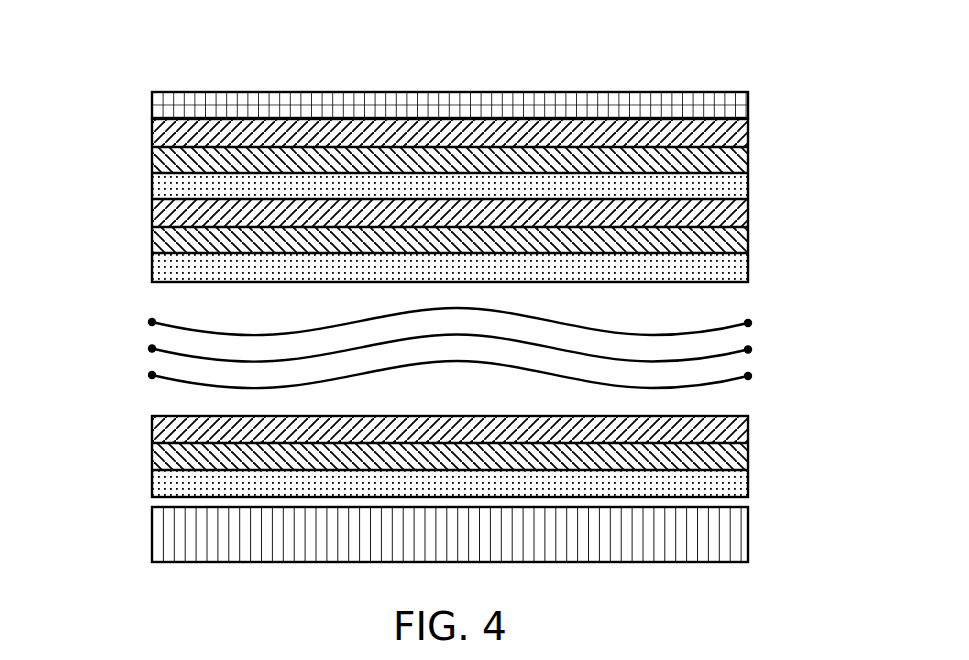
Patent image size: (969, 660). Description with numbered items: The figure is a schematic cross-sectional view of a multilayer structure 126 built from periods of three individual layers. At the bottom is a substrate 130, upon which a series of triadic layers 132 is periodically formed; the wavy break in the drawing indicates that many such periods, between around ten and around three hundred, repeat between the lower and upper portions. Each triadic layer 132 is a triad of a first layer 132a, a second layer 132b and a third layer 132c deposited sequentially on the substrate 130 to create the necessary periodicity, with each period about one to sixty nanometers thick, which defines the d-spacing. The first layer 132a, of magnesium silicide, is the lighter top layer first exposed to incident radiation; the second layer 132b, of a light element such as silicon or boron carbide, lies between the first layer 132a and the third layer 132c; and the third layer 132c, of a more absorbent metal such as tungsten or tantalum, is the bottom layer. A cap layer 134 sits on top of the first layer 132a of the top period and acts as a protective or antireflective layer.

The multilayer structure 126 is at (115, 52).
The substrate 130 is at (748, 535).
The triadic layer 132 is at (139, 119).
The first layer 132a is at (748, 135).
The second layer 132b is at (748, 161).
The third layer 132c is at (748, 188).
The cap layer 134 is at (748, 107).